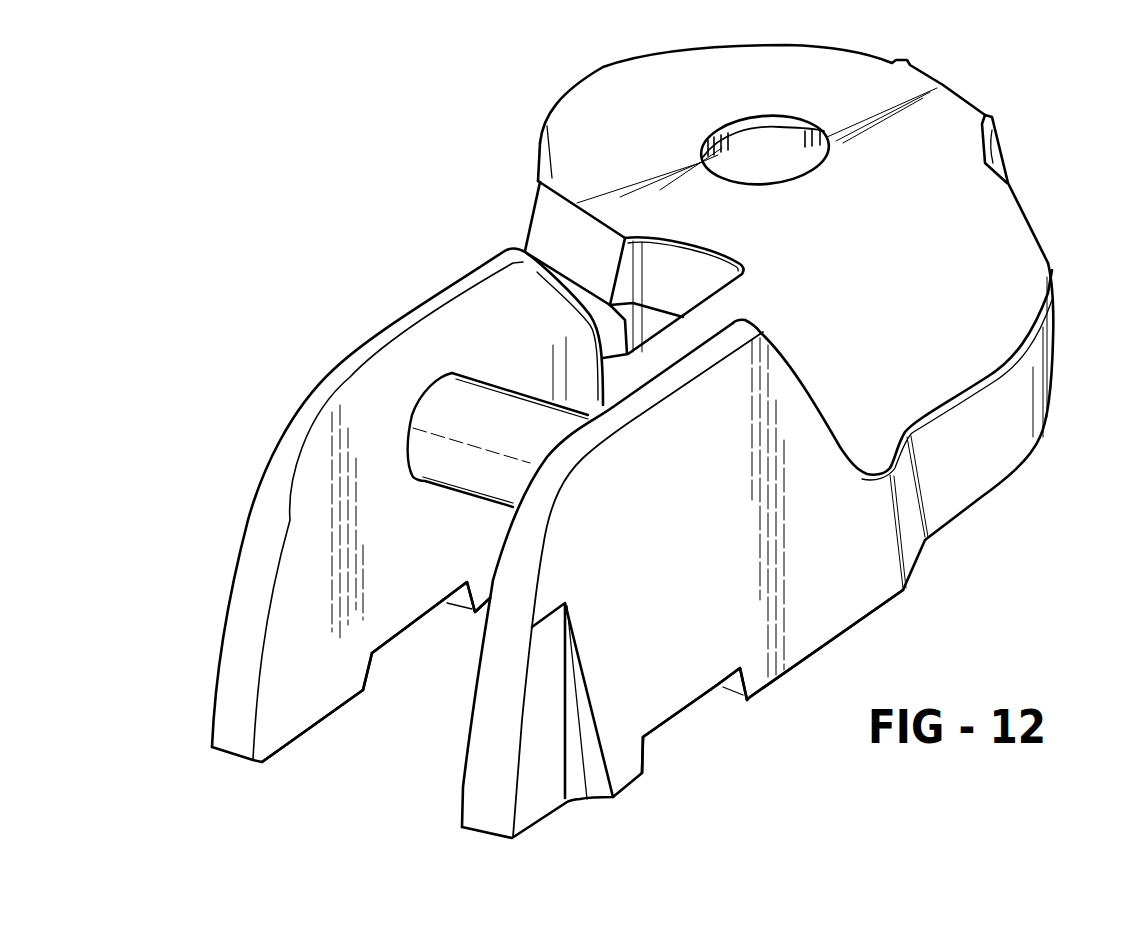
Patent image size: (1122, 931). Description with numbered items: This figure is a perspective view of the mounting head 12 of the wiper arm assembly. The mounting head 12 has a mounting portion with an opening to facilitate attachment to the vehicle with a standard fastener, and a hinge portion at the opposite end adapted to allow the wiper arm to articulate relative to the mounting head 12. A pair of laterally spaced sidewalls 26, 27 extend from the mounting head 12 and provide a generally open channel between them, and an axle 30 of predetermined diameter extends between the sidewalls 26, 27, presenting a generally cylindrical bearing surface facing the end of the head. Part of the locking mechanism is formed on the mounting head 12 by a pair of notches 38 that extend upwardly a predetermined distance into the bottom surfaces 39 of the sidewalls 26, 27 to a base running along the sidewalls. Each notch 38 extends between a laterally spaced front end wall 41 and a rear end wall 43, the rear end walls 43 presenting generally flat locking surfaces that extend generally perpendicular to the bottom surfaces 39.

The mounting head 12 is at (1027, 263).
The sidewall 26 is at (258, 494).
The sidewall 27 is at (862, 584).
The axle 30 is at (528, 418).
The notch 38 is at (397, 635).
The bottom surface 39 is at (316, 726).
The front end wall 41 is at (369, 677).
The rear end wall 43 is at (463, 602).